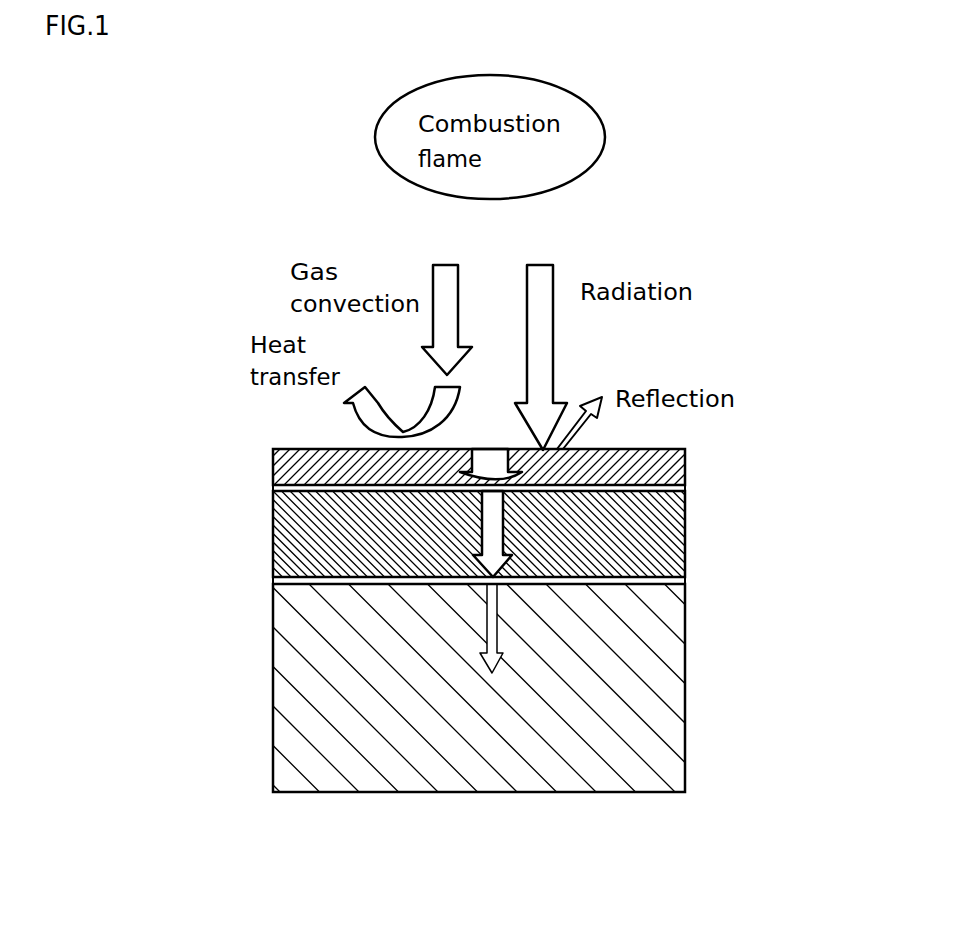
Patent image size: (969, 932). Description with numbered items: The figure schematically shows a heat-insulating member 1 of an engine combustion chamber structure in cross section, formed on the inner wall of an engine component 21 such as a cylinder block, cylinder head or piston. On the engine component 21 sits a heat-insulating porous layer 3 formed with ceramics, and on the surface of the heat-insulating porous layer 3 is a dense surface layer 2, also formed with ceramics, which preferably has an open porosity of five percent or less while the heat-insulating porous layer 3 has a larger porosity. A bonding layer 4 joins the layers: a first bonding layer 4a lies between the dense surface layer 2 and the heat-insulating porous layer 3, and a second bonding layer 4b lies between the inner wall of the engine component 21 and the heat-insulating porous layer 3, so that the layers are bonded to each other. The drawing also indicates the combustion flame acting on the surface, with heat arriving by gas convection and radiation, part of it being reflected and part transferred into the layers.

The heat-insulating member 1 is at (498, 522).
The dense surface layer 2 is at (670, 463).
The heat-insulating porous layer 3 is at (657, 542).
The bonding layer 4 is at (411, 538).
The first bonding layer 4a is at (273, 489).
The second bonding layer 4b is at (273, 581).
The engine component 21 is at (283, 697).